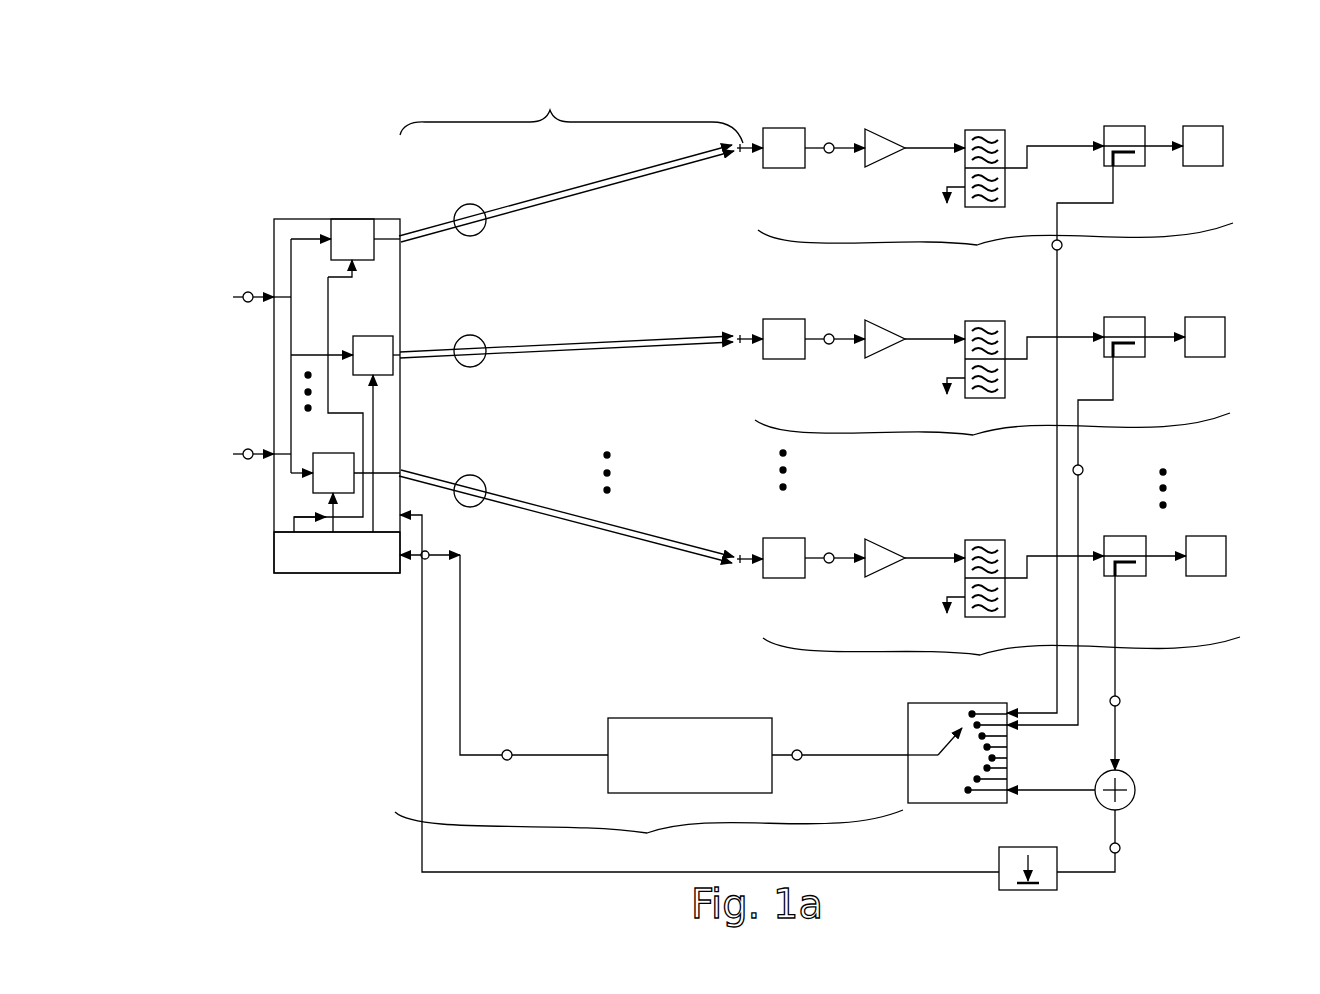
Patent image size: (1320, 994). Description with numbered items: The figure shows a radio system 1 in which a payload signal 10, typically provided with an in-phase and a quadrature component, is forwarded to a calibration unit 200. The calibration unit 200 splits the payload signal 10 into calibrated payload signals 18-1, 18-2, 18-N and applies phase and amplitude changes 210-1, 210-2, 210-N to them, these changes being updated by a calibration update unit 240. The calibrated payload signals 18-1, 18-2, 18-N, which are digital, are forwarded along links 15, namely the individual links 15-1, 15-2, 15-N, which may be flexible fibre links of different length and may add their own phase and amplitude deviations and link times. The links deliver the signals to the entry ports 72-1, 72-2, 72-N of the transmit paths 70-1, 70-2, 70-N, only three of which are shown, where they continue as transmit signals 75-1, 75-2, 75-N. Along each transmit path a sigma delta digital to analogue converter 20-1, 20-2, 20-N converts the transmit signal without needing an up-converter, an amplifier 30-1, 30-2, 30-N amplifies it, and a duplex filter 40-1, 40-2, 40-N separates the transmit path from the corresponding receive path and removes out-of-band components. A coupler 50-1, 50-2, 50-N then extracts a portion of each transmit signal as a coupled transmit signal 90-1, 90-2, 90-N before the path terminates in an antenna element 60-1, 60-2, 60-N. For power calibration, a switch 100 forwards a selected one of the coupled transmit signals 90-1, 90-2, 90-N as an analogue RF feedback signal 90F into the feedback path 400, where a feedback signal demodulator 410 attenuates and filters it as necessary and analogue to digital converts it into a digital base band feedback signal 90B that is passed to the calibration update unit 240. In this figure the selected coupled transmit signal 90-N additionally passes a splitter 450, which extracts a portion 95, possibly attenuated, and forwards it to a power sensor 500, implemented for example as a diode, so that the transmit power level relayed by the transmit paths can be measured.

The radio system 1 is at (350, 696).
The payload signal 10 is at (248, 303).
The links 15 is at (571, 111).
The link 15-1 is at (608, 190).
The link 15-2 is at (597, 360).
The link 15-N is at (613, 540).
The calibrated payload signal 18-1 is at (480, 236).
The calibrated payload signal 18-2 is at (470, 367).
The calibrated payload signal 18-N is at (473, 507).
The digital to analogue converter 20-1 is at (783, 128).
The digital to analogue converter 20-2 is at (783, 318).
The digital to analogue converter 20-N is at (783, 538).
The amplifier 30-1 is at (885, 129).
The amplifier 30-2 is at (880, 320).
The amplifier 30-N is at (880, 538).
The filter 40-1 is at (985, 128).
The filter 40-2 is at (985, 318).
The filter 40-N is at (985, 538).
The coupler 50-1 is at (1120, 125).
The coupler 50-2 is at (1125, 317).
The coupler 50-N is at (1125, 536).
The antenna element 60-1 is at (1205, 125).
The antenna element 60-2 is at (1210, 317).
The antenna element 60-N is at (1215, 536).
The transmit path 70-1 is at (995, 249).
The transmit path 70-2 is at (992, 437).
The transmit path 70-N is at (1001, 659).
The entry port 72-1 is at (740, 158).
The entry port 72-2 is at (740, 330).
The entry port 72-N is at (740, 545).
The transmit signal 75-1 is at (830, 155).
The transmit signal 75-2 is at (830, 345).
The transmit signal 75-N is at (830, 566).
The coupled transmit signal 90-1 is at (1062, 246).
The coupled transmit signal 90-2 is at (1083, 470).
The coupled transmit signal 90-N is at (1121, 701).
The base band feedback signal 90B is at (507, 750).
The feedback signal 90F is at (797, 750).
The portion 95 is at (1121, 848).
The switch 100 is at (918, 703).
The calibration unit 200 is at (283, 233).
The phase and amplitude change 210-1 is at (350, 218).
The phase and amplitude change 210-2 is at (375, 336).
The phase and amplitude change 210-N is at (352, 453).
The calibration update unit 240 is at (337, 416).
The feedback path 400 is at (697, 693).
The feedback signal demodulator 410 is at (690, 755).
The splitter 450 is at (1136, 790).
The power sensor 500 is at (1035, 847).